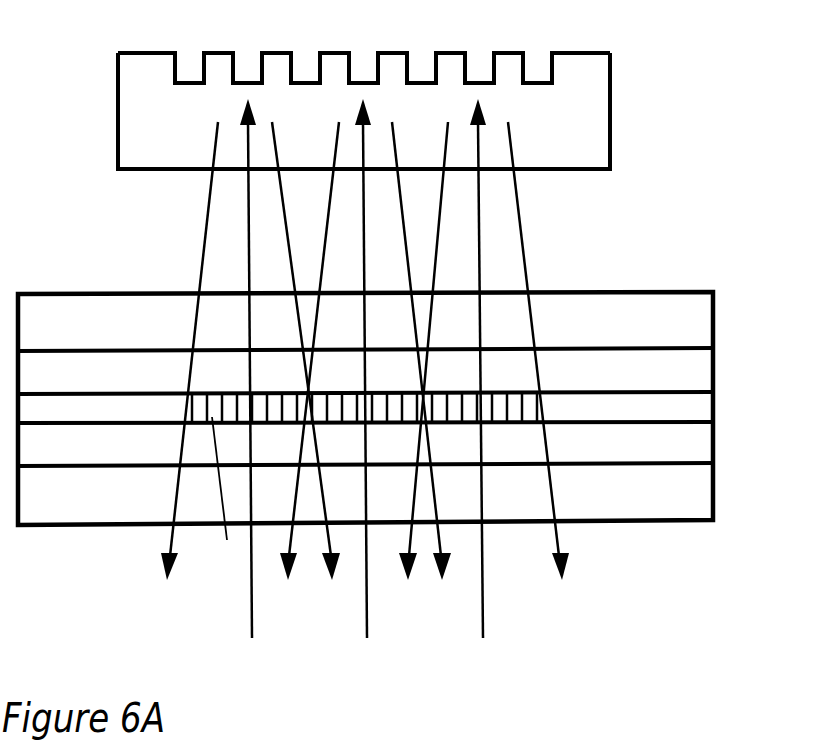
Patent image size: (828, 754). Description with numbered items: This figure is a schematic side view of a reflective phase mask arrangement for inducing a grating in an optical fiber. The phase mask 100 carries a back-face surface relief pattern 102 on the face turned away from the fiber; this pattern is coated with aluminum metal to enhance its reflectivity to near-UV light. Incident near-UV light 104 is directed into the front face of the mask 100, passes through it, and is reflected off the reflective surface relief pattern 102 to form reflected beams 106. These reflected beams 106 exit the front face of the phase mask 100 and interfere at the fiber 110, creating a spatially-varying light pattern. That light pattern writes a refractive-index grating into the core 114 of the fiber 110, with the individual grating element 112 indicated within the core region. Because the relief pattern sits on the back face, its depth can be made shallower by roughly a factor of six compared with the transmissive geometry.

The phase mask 100 is at (173, 131).
The back-face surface relief pattern 102 is at (449, 53).
The incident near-UV light 104 is at (366, 387).
The reflected beams 106 is at (328, 547).
The fiber 110 is at (66, 547).
The detector pixel 112 is at (227, 540).
The core 114 is at (713, 398).